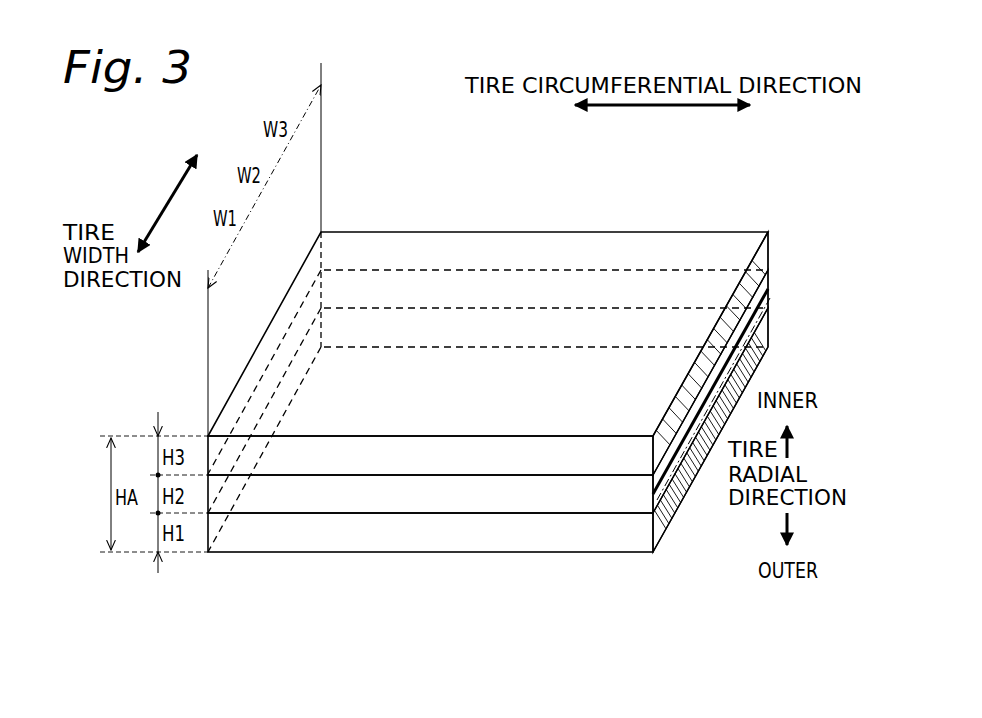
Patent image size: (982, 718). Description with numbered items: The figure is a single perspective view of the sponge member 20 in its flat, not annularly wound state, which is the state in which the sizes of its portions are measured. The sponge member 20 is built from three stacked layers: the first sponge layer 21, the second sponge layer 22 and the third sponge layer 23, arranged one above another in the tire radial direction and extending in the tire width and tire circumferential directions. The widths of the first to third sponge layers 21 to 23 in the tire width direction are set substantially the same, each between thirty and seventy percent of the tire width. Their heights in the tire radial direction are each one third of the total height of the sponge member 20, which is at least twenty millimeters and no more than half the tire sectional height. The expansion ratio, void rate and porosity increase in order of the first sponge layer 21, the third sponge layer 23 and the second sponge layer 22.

The sponge member 20 is at (527, 210).
The first sponge layer 21 is at (373, 538).
The second sponge layer 22 is at (443, 495).
The third sponge layer 23 is at (517, 453).